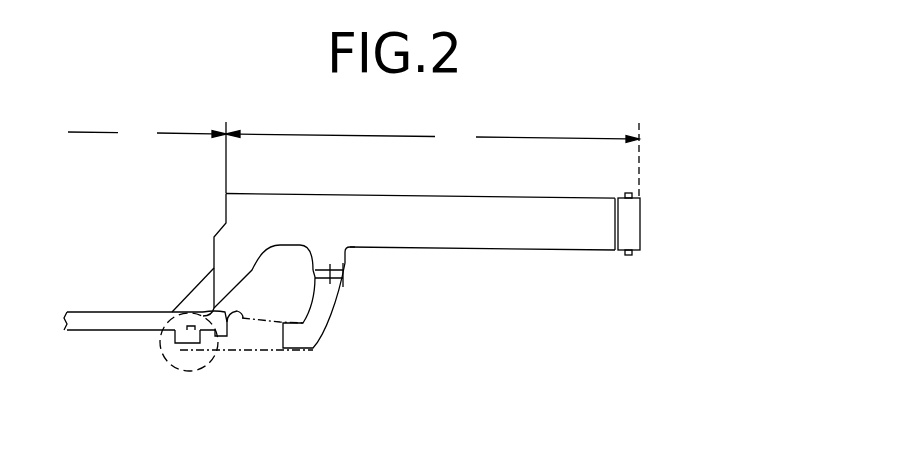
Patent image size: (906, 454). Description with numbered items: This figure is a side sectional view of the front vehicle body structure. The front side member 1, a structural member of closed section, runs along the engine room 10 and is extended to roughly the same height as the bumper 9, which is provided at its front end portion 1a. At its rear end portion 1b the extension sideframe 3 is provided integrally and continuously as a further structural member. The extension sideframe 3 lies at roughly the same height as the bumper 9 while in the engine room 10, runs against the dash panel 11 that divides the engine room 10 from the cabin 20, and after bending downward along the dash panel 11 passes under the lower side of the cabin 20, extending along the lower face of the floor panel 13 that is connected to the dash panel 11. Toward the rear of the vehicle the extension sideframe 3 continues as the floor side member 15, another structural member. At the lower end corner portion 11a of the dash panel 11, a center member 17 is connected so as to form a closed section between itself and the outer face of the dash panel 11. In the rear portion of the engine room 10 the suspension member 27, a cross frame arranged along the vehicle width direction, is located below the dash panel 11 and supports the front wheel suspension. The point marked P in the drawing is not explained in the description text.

The front side member 1 is at (505, 235).
The front end portion 1a is at (622, 210).
The rear end portion 1b is at (383, 235).
The extension sideframe 3 is at (250, 240).
The bumper 9 is at (640, 242).
The engine room 10 is at (432, 160).
The dash panel 11 is at (220, 227).
The lower end corner portion 11a is at (182, 305).
The floor panel 13 is at (93, 312).
The floor side member 15 is at (82, 330).
The center member 17 is at (240, 318).
The cabin 20 is at (147, 155).
The suspension member 27 is at (312, 350).
The pivot point P is at (158, 372).